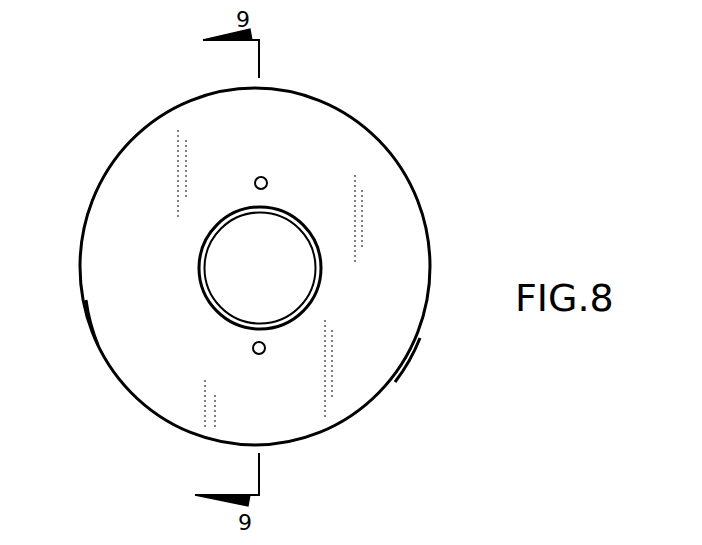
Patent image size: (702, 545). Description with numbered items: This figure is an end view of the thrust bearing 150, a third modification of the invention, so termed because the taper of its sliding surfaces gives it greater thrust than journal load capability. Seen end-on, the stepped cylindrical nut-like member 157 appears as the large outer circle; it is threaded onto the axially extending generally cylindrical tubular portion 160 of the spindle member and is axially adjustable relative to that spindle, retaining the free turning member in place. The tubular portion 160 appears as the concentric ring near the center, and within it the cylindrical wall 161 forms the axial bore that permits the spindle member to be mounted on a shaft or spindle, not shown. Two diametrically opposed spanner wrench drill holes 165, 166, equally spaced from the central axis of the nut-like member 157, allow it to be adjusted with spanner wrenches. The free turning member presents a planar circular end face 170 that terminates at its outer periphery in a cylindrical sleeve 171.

The thrust bearing 150 is at (424, 198).
The nut-like member 157 is at (395, 343).
The tubular portion 160 is at (302, 222).
The cylindrical wall 161 is at (302, 316).
The spanner wrench drill hole 165 is at (266, 179).
The spanner wrench drill hole 166 is at (255, 352).
The circular end face 170 is at (152, 226).
The cylindrical sleeve 171 is at (90, 323).